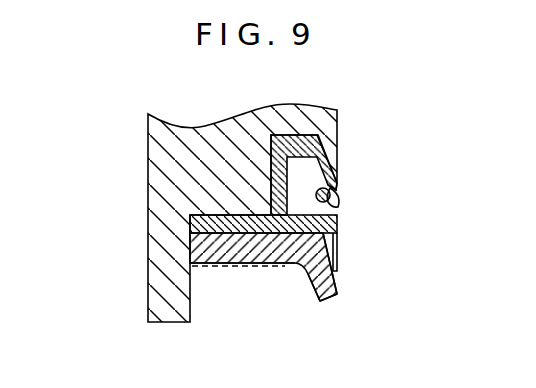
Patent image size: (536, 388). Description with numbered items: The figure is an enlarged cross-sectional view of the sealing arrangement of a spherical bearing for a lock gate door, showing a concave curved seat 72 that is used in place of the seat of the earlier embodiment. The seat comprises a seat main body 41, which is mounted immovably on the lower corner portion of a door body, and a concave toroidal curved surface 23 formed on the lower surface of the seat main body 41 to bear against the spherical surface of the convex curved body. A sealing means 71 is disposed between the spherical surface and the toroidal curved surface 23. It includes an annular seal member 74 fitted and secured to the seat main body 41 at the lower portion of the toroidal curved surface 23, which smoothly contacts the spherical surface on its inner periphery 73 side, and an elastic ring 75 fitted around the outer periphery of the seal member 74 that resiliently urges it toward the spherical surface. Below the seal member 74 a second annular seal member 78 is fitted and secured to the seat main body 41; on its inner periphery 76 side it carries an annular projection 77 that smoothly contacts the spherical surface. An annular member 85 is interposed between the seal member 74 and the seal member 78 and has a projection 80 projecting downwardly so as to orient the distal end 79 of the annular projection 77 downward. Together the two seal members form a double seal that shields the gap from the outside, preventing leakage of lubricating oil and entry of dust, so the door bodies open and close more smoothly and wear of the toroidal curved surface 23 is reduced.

The toroidal curved surface 23 is at (239, 213).
The concave curved seat 72 is at (212, 213).
The seat main body 41 is at (157, 208).
The sealing means 71 is at (331, 186).
The inner periphery 73 is at (330, 192).
The elastic ring 75 is at (340, 199).
The seal member 74 is at (341, 208).
The annular member 85 is at (192, 225).
The projection 80 is at (291, 287).
The seal member 78 is at (284, 256).
The inner periphery 76 is at (335, 280).
The annular projection 77 is at (322, 286).
The distal end 79 is at (338, 297).